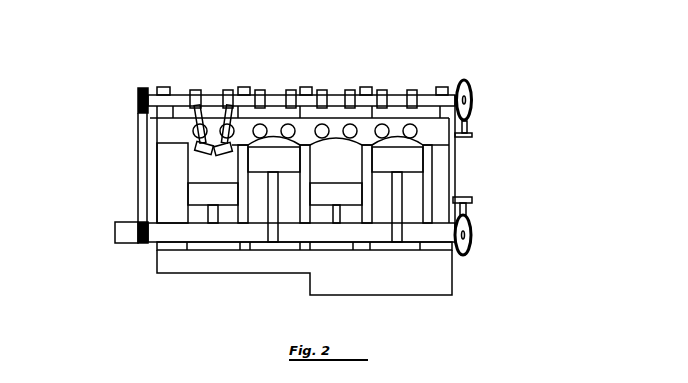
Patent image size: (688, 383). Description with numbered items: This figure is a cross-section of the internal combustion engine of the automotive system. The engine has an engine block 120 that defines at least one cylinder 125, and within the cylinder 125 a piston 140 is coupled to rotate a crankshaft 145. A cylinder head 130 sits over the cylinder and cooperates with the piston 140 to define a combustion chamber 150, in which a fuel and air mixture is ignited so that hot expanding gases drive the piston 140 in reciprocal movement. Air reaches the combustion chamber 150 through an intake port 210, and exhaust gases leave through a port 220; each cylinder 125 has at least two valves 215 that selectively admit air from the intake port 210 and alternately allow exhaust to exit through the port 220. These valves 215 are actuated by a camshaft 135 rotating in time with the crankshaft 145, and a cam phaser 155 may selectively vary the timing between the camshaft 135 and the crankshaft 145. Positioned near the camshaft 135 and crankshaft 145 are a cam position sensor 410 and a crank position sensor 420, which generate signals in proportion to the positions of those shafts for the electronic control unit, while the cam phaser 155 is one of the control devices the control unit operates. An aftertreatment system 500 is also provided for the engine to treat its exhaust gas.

The engine block 120 is at (157, 185).
The cylinder 125 is at (302, 175).
The cylinder head 130 is at (158, 142).
The camshaft 135 is at (205, 93).
The piston 140 is at (338, 193).
The crankshaft 145 is at (183, 233).
The combustion chamber 150 is at (398, 145).
The cam phaser 155 is at (137, 93).
The intake port 210 is at (323, 122).
The valves 215 is at (192, 144).
The exhaust port 220 is at (272, 103).
The cam position sensor 410 is at (470, 132).
The crank position sensor 420 is at (468, 198).
The aftertreatment system 500 is at (115, 233).